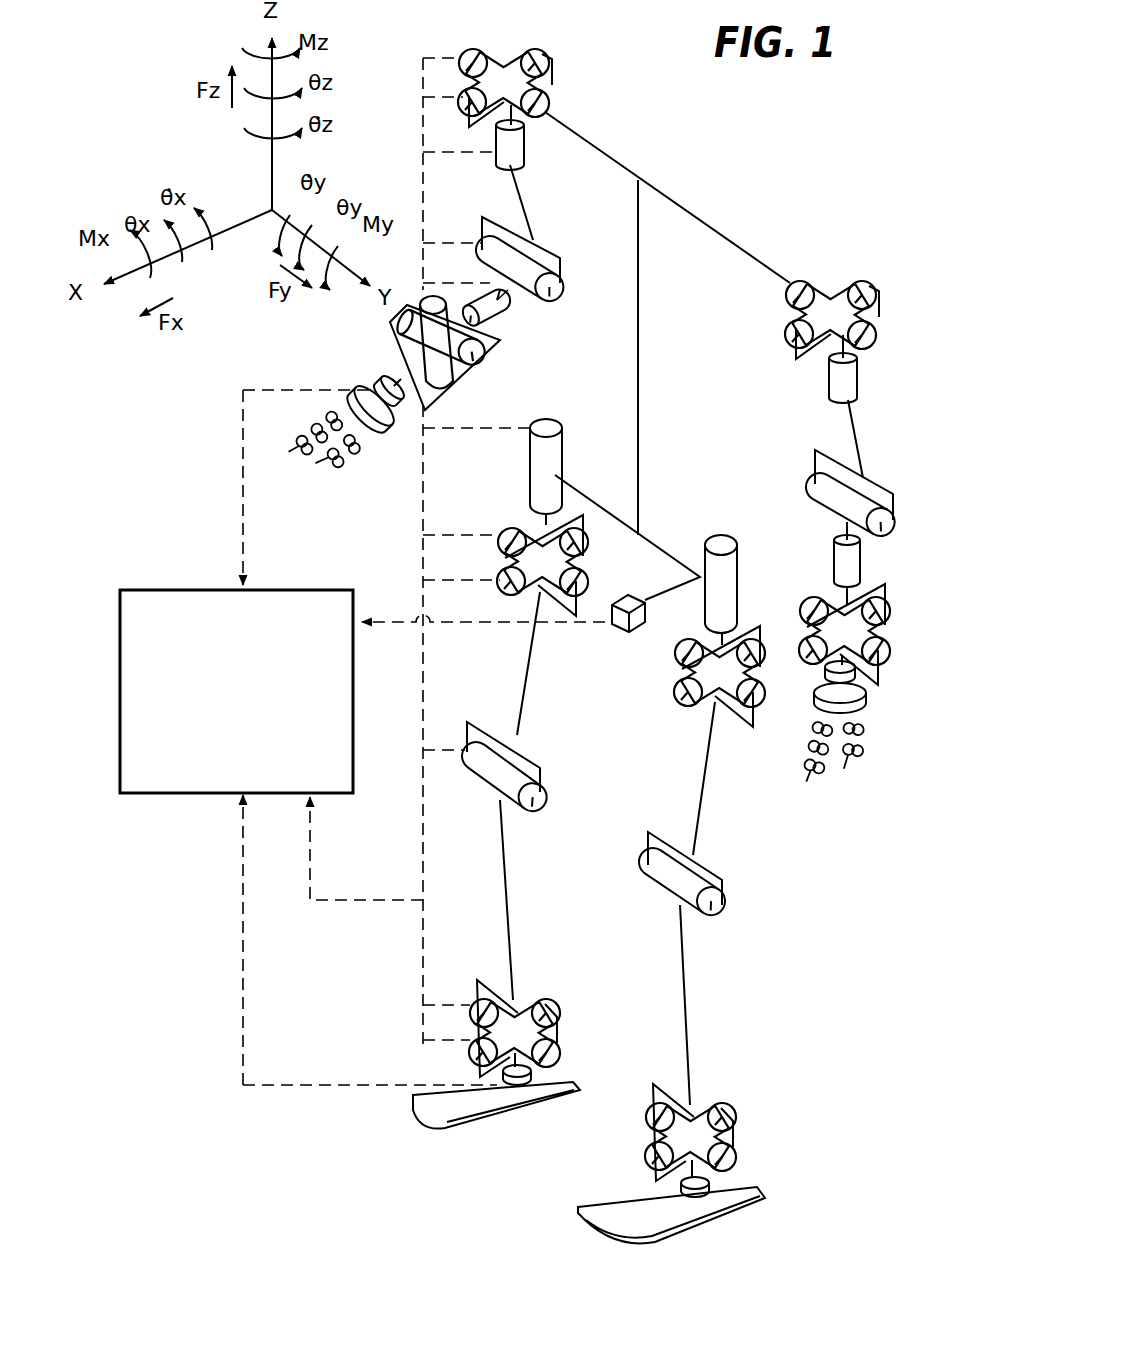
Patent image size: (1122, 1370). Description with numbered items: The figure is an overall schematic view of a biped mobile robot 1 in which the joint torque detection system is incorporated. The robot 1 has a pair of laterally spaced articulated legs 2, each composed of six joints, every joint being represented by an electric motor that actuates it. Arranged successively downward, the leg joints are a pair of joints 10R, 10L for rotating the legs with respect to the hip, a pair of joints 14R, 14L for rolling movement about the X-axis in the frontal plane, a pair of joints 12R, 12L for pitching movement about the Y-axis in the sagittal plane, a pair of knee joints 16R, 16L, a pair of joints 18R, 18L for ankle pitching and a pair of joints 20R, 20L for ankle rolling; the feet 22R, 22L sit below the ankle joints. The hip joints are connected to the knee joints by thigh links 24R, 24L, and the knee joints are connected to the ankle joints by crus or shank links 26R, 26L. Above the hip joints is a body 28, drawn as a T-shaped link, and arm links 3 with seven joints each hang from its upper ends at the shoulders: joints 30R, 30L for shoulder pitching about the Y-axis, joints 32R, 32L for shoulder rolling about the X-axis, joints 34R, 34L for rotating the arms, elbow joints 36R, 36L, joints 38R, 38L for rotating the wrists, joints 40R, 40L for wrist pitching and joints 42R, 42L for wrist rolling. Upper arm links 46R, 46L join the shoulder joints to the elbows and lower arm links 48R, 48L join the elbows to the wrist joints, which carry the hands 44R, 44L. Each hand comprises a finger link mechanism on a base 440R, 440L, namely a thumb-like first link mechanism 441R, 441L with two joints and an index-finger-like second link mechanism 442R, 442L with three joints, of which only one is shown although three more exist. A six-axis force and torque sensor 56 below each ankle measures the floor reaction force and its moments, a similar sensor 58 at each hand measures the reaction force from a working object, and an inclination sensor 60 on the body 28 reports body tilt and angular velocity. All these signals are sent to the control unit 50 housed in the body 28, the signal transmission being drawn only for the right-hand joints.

The robot 1 is at (825, 154).
The legs (leg links) 2 is at (836, 824).
The arm links 3 is at (916, 312).
The joint for rotating leg with respect to hip 10R is at (548, 426).
The joint for rotating leg with respect to hip 10L is at (730, 572).
The joint for pitching movement with respect to hip 12R is at (512, 530).
The joint for pitching movement with respect to hip 12L is at (752, 693).
The joint for rolling movement with respect to hip 14R is at (523, 569).
The joint for rolling movement with respect to hip 14L is at (786, 740).
The knee joint 16R is at (526, 800).
The knee joint 16L is at (722, 906).
The joint for pitching movement with respect to ankle 18R is at (549, 1009).
The joint for pitching movement with respect to ankle 18L is at (727, 1114).
The joint for rolling movement with respect to ankle 20R is at (540, 1012).
The joint for rolling movement with respect to ankle 20L is at (722, 1112).
The right foot 22R is at (437, 1097).
The left foot 22L is at (760, 1200).
The thigh link 24R is at (530, 728).
The thigh link 24L is at (708, 814).
The crus (shank) link 26R is at (502, 878).
The crus (shank) link 26L is at (696, 1000).
The body (body link) 28 is at (641, 425).
The joint for pitching movement of arm with respect to shoulder 30R is at (478, 52).
The joint for pitching movement of arm with respect to shoulder 30L is at (804, 278).
The joint for rolling movement of arm with respect to shoulder 32R is at (522, 63).
The joint for rolling movement of arm with respect to shoulder 32L is at (845, 291).
The joint for rotating arm with respect to shoulder 34R is at (526, 156).
The joint for rotating arm with respect to shoulder 34L is at (860, 380).
The elbow joint 36R is at (562, 286).
The elbow joint 36L is at (895, 514).
The joint for rotating wrist with respect to elbow 38R is at (500, 308).
The joint for rotating wrist with respect to elbow 38L is at (866, 566).
The joint for pitching movement of wrist with respect to elbow 40R is at (395, 337).
The joint for pitching movement of wrist with respect to elbow 40L is at (873, 634).
The joint for rolling movement of wrist with respect to elbow 42R is at (412, 356).
The joint for rolling movement of wrist with respect to elbow 42L is at (880, 614).
The hand 44R is at (326, 447).
The hand 44L is at (869, 752).
The upper arm link 46R is at (535, 206).
The upper arm link 46L is at (860, 436).
The lower arm link 48R is at (500, 290).
The lower arm link 48L is at (846, 534).
The control unit 50 is at (170, 588).
The six-axis force and torque sensor 56 is at (521, 1084).
The six-axis force and torque sensor 58 is at (345, 400).
The inclination sensor 60 is at (625, 595).
The base 440R is at (371, 409).
The base 440L is at (896, 704).
The first (thumb-like) link mechanism 441R is at (315, 515).
The first (thumb-like) link mechanism 441L is at (909, 804).
The second (index finger-like) link mechanism 442R is at (229, 410).
The second (index finger-like) link mechanism 442L is at (768, 815).